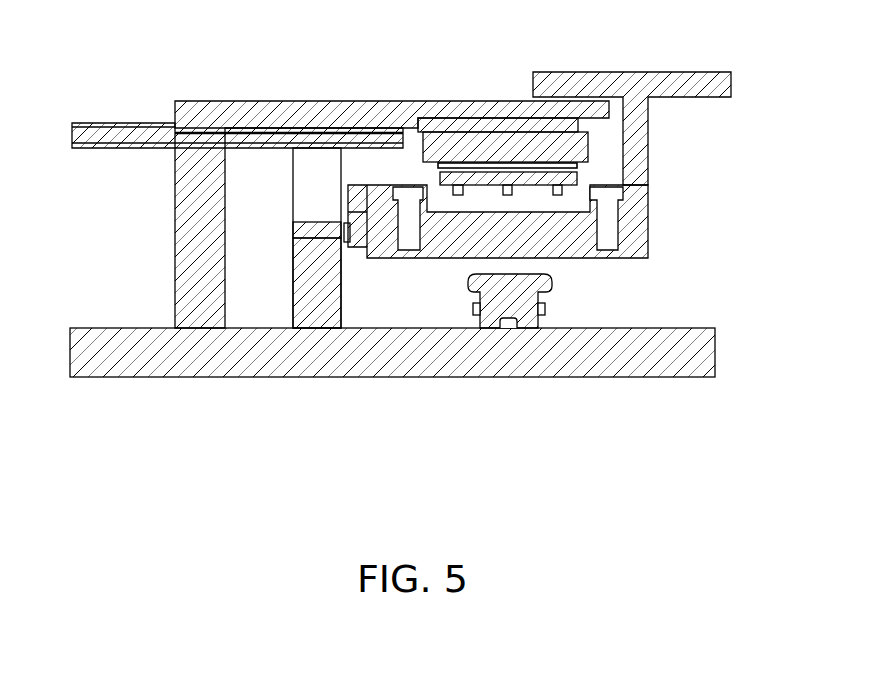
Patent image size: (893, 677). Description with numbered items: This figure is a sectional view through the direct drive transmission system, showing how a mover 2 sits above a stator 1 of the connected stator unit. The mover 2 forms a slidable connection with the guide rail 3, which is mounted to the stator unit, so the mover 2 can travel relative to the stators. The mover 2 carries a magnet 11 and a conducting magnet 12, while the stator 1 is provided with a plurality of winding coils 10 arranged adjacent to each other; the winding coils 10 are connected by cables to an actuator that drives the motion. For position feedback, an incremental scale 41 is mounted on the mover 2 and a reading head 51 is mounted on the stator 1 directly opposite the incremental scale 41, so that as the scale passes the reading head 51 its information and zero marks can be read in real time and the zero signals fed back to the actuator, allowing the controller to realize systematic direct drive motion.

The stator 1 is at (287, 110).
The mover 2 is at (657, 82).
The guide rail 3 is at (522, 303).
The winding coil 10 is at (447, 142).
The magnet 11 is at (575, 178).
The conducting magnet 12 is at (573, 192).
The incremental scale 41 is at (350, 242).
The reading head 51 is at (293, 236).